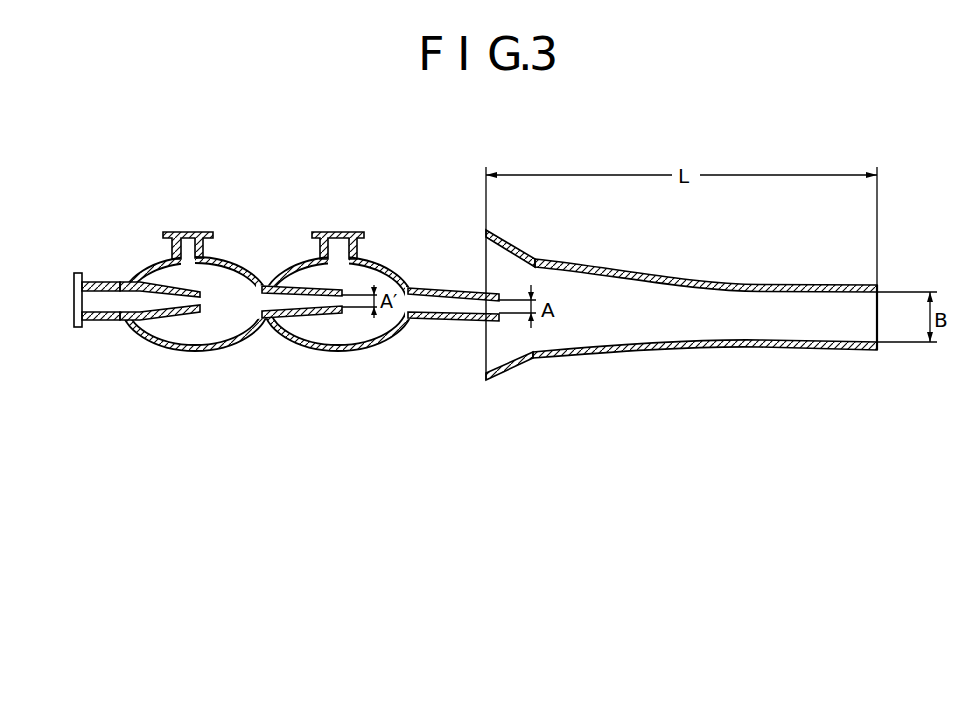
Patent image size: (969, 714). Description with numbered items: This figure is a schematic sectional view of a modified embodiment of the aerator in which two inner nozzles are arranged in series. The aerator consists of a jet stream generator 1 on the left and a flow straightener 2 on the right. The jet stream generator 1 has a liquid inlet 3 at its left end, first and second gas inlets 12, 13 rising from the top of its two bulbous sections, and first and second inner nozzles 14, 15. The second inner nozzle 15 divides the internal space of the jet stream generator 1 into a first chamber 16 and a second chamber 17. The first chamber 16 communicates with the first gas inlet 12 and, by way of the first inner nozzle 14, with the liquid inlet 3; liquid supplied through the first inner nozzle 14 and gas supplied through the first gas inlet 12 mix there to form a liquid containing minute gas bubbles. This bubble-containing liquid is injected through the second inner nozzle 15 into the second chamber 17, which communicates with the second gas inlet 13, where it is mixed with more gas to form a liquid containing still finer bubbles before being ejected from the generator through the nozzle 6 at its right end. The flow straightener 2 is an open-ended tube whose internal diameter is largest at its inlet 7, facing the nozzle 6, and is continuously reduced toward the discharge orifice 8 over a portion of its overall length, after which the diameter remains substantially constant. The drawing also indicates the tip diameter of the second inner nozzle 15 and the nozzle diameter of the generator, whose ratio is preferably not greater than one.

The jet stream generator 1 is at (264, 293).
The flow straightener 2 is at (661, 329).
The liquid inlet 3 is at (92, 302).
The inner nozzle 6 is at (483, 313).
The inlet 7 is at (499, 270).
The discharge orifice 8 is at (867, 313).
The first gas inlet 12 is at (188, 232).
The second gas inlet 13 is at (340, 236).
The first inner nozzle 14 is at (183, 303).
The second inner nozzle 15 is at (330, 302).
The first chamber 16 is at (205, 332).
The second chamber 17 is at (345, 335).